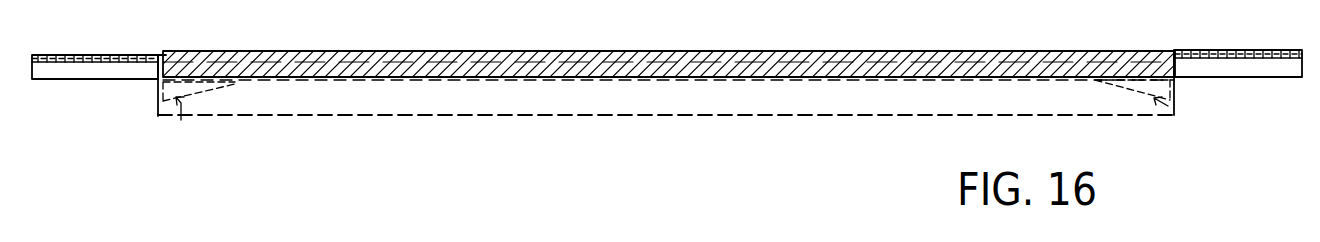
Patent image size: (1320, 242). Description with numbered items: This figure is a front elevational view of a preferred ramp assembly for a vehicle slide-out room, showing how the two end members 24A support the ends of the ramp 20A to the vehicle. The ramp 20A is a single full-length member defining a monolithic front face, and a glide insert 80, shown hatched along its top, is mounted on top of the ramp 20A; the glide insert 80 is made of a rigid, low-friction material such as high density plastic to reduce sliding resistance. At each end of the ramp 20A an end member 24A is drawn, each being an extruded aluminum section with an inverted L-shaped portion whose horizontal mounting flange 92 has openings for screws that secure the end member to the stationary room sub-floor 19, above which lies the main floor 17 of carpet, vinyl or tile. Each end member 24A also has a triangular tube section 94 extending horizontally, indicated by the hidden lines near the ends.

The main floor 17 is at (100, 53).
The sub-floor 19 is at (100, 82).
The ramp 20A is at (594, 105).
The end member 24A is at (183, 130).
The glide insert 80 is at (458, 72).
The horizontal mounting flange 92 is at (1180, 53).
The triangular tube section 94 is at (198, 88).